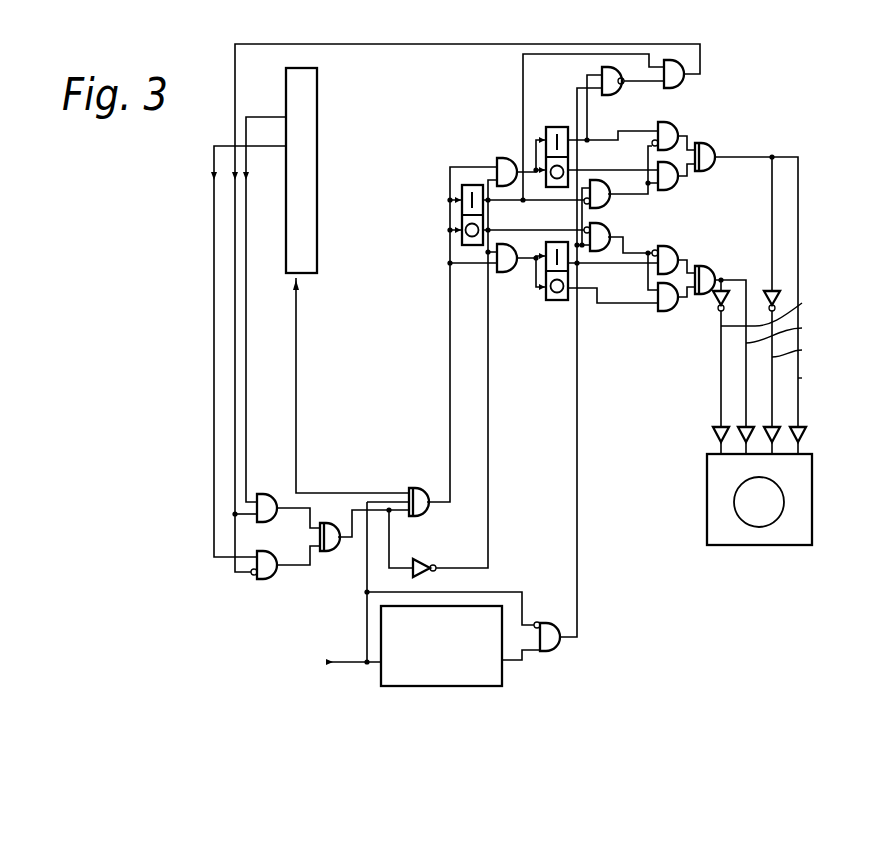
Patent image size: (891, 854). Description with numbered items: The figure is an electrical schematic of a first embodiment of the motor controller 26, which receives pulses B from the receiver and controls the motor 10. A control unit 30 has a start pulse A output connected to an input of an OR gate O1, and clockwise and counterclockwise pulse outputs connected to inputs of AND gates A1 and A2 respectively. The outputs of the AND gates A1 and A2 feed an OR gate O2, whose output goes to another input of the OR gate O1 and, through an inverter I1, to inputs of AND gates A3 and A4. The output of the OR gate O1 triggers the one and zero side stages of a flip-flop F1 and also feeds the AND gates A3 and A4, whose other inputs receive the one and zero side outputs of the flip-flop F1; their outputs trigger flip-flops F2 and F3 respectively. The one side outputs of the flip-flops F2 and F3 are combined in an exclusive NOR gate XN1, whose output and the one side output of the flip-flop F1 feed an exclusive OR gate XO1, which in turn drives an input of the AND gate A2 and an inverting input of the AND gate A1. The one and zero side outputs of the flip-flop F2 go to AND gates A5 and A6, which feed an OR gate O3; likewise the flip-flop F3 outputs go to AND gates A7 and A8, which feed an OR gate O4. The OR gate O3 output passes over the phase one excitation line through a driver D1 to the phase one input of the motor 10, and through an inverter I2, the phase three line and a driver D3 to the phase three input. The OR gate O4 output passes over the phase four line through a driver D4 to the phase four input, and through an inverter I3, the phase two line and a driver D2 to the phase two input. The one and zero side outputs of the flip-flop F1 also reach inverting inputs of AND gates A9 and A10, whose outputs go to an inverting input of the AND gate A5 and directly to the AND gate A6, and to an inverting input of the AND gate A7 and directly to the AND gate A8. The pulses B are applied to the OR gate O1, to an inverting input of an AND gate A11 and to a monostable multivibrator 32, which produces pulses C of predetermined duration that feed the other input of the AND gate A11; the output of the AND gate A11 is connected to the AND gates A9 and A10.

The motor controller 26 is at (191, 282).
The control unit 30 is at (318, 172).
The monostable multivibrator 32 is at (380, 627).
The motor 10 is at (707, 512).
The AND gate A1 is at (275, 553).
The AND gate A2 is at (267, 493).
The AND gate A3 is at (504, 158).
The AND gate A4 is at (506, 273).
The AND gate A5 is at (672, 123).
The AND gate A6 is at (674, 189).
The AND gate A7 is at (673, 246).
The AND gate A8 is at (668, 311).
The AND gate A9 is at (603, 182).
The AND gate A10 is at (606, 232).
The AND gate A11 is at (553, 622).
The OR gate O1 is at (416, 487).
The OR gate O2 is at (330, 552).
The OR gate O3 is at (714, 150).
The OR gate O4 is at (714, 272).
The flip-flop F1 is at (463, 180).
The flip-flop F2 is at (553, 127).
The flip-flop F3 is at (555, 300).
The exclusive NOR gate XN1 is at (614, 95).
The exclusive OR gate XO1 is at (684, 78).
The inverter I1 is at (425, 560).
The inverter I2 is at (780, 291).
The inverter I3 is at (717, 308).
The driver D1 is at (799, 428).
The driver D2 is at (720, 426).
The driver D3 is at (773, 425).
The driver D4 is at (745, 424).